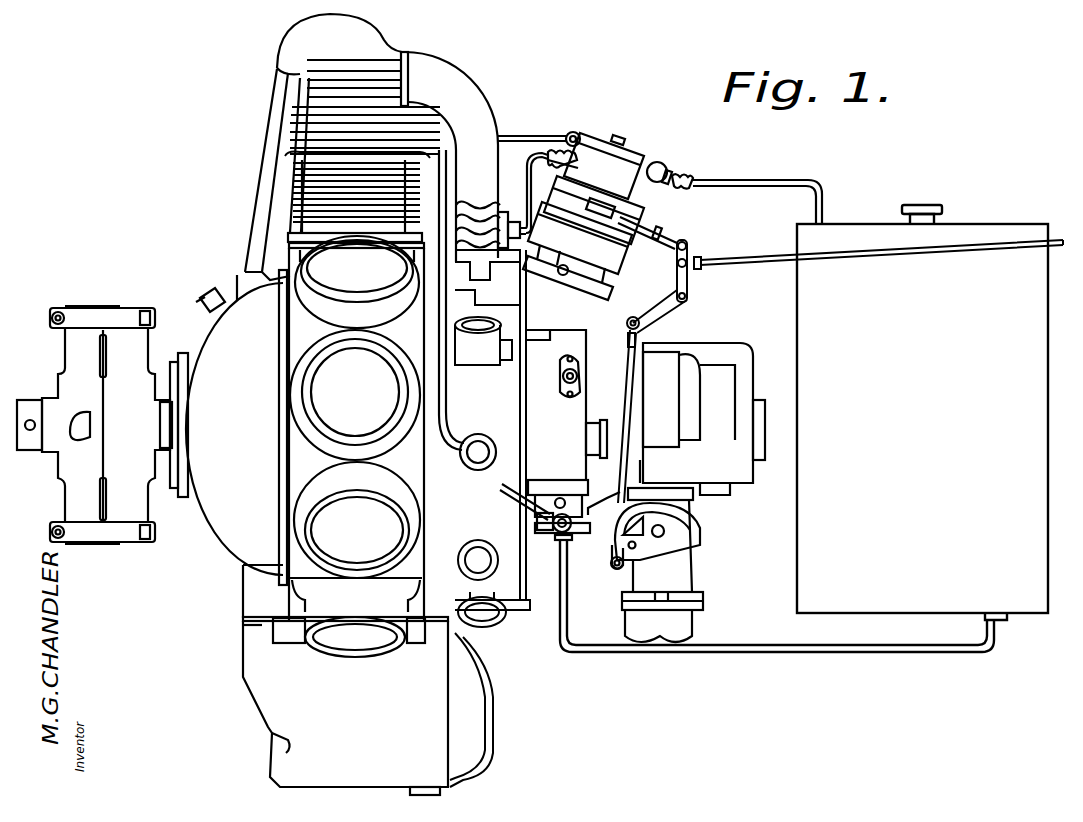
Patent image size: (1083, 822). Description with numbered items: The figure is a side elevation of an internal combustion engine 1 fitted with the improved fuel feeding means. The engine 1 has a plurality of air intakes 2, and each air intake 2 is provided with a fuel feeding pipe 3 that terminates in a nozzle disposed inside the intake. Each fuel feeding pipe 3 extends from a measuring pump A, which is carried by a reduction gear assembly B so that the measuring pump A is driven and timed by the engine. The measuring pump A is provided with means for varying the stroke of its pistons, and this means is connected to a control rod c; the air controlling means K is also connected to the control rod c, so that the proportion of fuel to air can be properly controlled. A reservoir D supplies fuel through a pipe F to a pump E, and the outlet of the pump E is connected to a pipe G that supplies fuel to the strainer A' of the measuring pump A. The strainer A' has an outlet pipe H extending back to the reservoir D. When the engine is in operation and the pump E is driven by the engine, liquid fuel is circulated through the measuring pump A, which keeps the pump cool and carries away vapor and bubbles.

The internal combustion engine 1 is at (273, 404).
The air intake 2 is at (472, 107).
The fuel feeding pipe 3 is at (528, 183).
The strainer A' is at (628, 147).
The measuring pump A is at (603, 210).
The reduction gear assembly B is at (600, 251).
The control rod c is at (848, 252).
The reservoir D is at (922, 412).
The pump E is at (570, 502).
The pipe F is at (757, 656).
The pipe G is at (444, 395).
The outlet pipe H is at (745, 190).
The air controlling means K is at (680, 542).